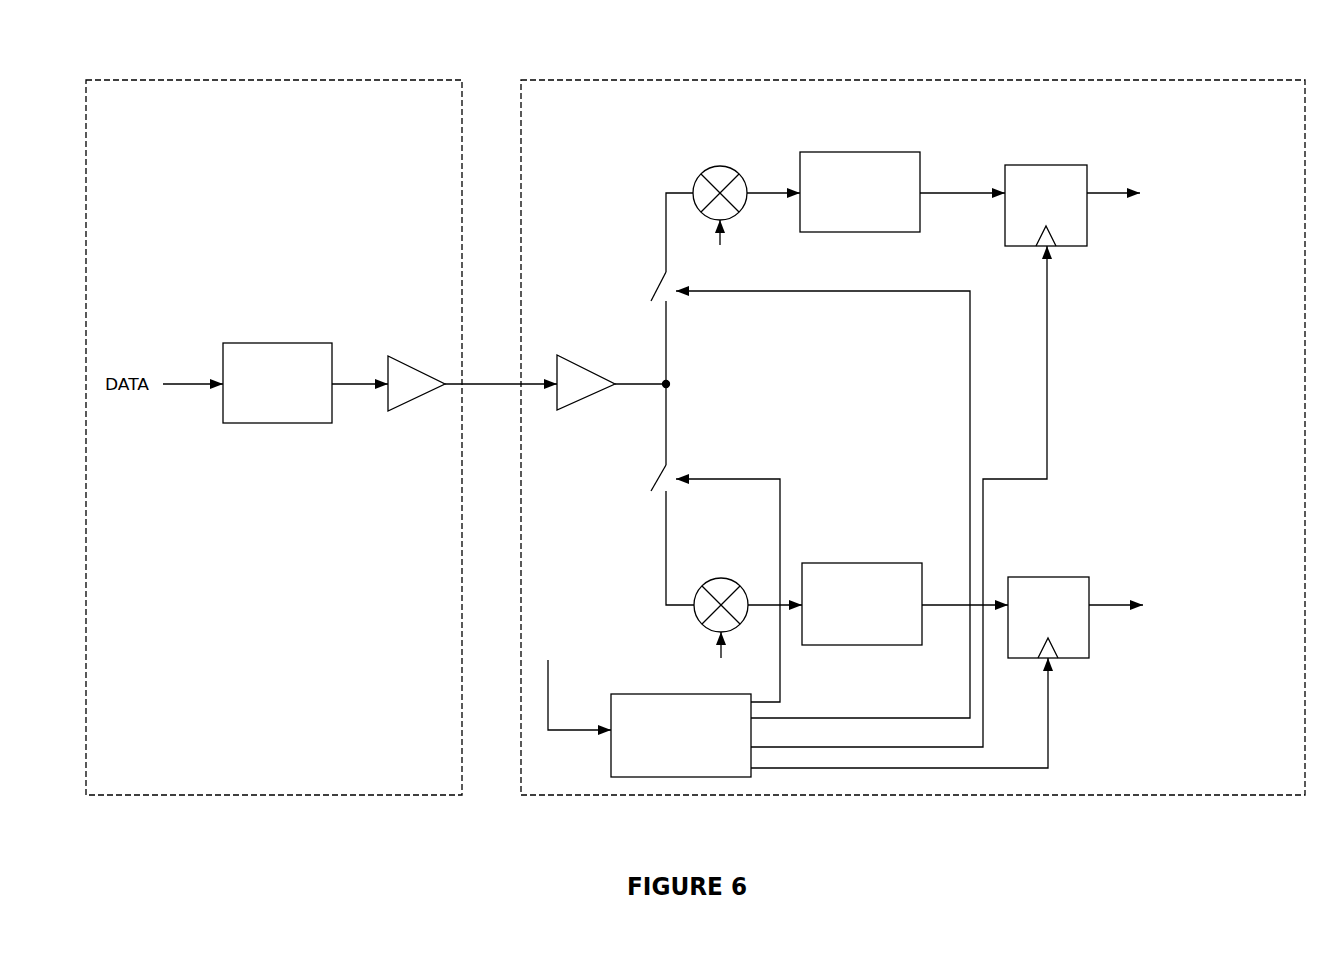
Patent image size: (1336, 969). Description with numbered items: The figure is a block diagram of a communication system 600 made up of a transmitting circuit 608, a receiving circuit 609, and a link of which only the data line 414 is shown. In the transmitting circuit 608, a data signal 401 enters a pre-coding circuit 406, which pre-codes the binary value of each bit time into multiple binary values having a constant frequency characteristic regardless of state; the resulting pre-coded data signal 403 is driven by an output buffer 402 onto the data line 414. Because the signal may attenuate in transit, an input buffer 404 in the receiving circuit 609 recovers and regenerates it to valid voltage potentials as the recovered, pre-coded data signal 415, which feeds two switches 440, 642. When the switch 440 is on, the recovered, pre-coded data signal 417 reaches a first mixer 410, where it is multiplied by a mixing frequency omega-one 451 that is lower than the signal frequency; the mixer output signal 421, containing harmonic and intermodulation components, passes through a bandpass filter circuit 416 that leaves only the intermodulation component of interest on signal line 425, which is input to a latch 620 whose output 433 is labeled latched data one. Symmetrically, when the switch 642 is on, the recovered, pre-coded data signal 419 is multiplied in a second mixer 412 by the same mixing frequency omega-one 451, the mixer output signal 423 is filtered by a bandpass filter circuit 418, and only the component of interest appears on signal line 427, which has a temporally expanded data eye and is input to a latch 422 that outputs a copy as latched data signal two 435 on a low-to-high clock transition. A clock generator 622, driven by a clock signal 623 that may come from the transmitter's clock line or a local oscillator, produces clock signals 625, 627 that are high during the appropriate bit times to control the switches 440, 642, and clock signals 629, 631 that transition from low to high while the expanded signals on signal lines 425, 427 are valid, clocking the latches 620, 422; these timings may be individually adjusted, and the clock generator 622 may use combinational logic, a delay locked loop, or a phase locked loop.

The communication system 600 is at (695, 403).
The transmitting circuit 608 is at (169, 80).
The receiving circuit 609 is at (551, 80).
The data signal 401 is at (182, 382).
The pre-coding circuit 406 is at (315, 343).
The pre-coded data signal 403 is at (359, 382).
The output buffer 402 is at (416, 367).
The data line 414 is at (499, 382).
The input buffer 404 is at (583, 367).
The recovered, pre-coded data signal 415 is at (647, 382).
The switch 440 is at (654, 295).
The switch 642 is at (654, 483).
The recovered, pre-coded data signal 417 is at (679, 191).
The first mixer 410 is at (728, 167).
The mixing frequency ω1 451 is at (722, 240).
The mixer output signal 421 is at (774, 191).
The bandpass filter circuit 416 is at (882, 152).
The signal line 425 is at (966, 191).
The latch 620 is at (1074, 163).
The latched data 1 output 433 is at (1114, 192).
The clock signal 625 is at (986, 399).
The clock signal 629 is at (1047, 268).
The clock signal 627 is at (780, 492).
The clock signal 631 is at (1048, 686).
The recovered, pre-coded data signal 419 is at (689, 604).
The second mixer 412 is at (728, 579).
The mixer output signal 423 is at (763, 604).
The bandpass filter circuit 418 is at (883, 563).
The signal line 427 is at (951, 604).
The latch 422 is at (1078, 577).
The latched data signal 2 435 is at (1119, 604).
The clock generator 622 is at (623, 694).
The clock signal 623 is at (581, 730).